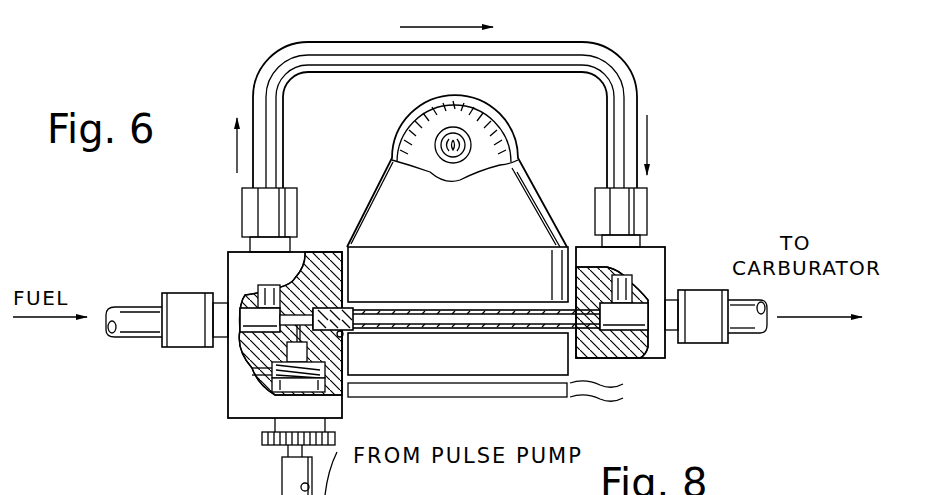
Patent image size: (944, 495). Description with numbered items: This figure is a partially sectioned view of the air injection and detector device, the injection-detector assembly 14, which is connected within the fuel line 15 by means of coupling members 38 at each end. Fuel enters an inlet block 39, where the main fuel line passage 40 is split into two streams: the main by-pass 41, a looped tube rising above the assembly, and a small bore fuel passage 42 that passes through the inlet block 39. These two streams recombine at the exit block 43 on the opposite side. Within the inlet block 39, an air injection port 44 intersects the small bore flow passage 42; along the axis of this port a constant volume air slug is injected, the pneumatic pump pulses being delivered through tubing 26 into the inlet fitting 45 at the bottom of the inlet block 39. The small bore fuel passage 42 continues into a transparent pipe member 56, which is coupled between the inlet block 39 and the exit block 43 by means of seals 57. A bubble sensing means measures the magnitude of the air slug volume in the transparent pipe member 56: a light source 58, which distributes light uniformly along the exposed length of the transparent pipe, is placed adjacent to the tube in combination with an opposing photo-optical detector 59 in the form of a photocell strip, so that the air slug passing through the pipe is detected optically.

The injection-detector assembly 14 is at (217, 387).
The fuel line 15 is at (138, 340).
The tubing 26 is at (282, 477).
The coupling members 38 is at (202, 347).
The inlet block 39 is at (233, 250).
The main fuel line passage 40 is at (258, 315).
The main by-pass 41 is at (288, 171).
The small bore fuel passage 42 is at (302, 248).
The exit block 43 is at (655, 248).
The air injection port 44 is at (285, 330).
The inlet fitting 45 is at (337, 435).
The transparent pipe member 56 is at (432, 308).
The seals 57 is at (333, 308).
The light source 58 is at (470, 132).
The photo-optical detector 59 is at (443, 402).